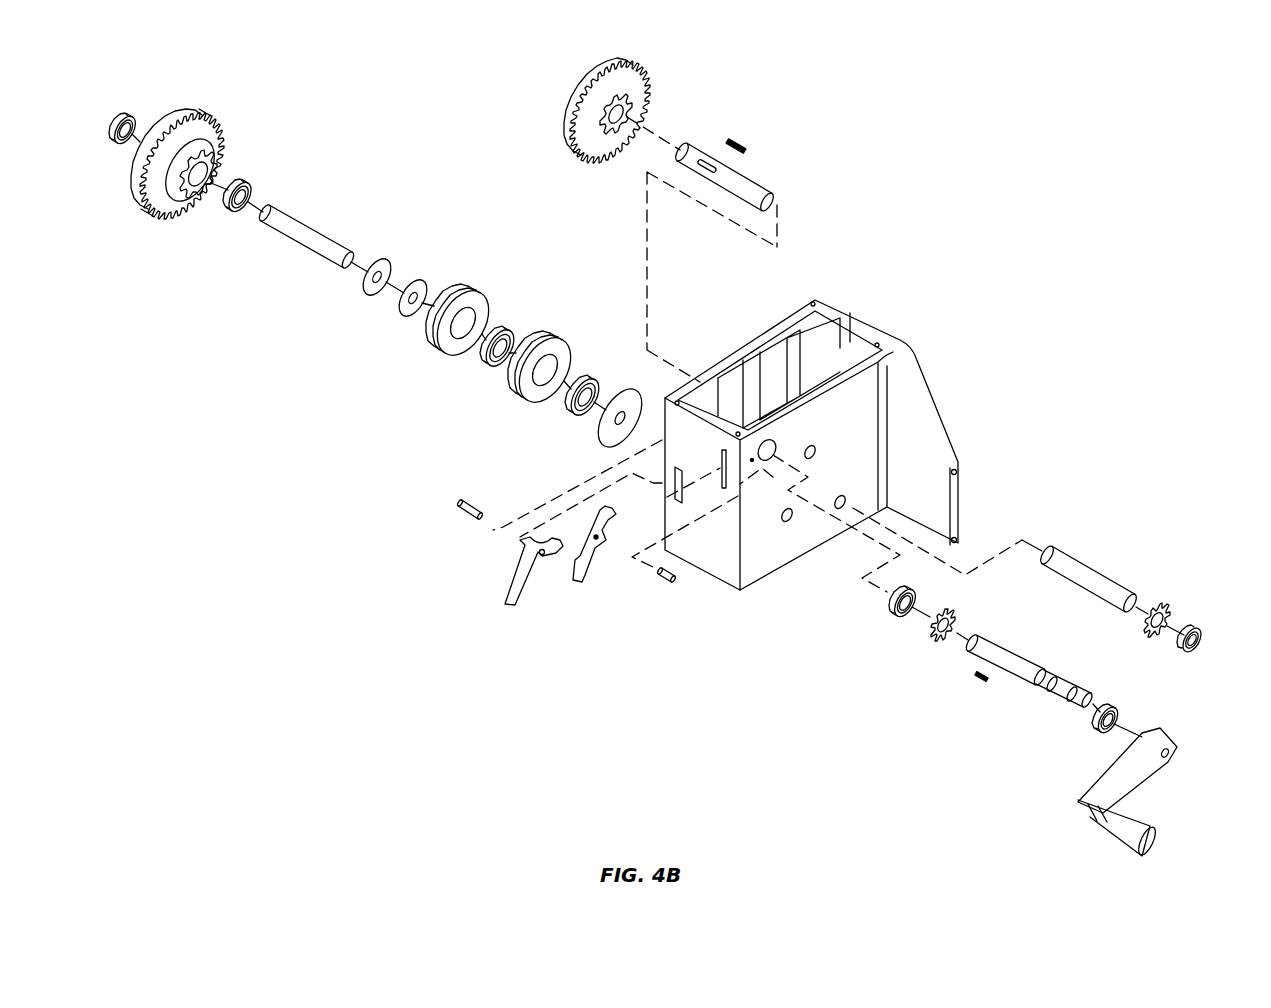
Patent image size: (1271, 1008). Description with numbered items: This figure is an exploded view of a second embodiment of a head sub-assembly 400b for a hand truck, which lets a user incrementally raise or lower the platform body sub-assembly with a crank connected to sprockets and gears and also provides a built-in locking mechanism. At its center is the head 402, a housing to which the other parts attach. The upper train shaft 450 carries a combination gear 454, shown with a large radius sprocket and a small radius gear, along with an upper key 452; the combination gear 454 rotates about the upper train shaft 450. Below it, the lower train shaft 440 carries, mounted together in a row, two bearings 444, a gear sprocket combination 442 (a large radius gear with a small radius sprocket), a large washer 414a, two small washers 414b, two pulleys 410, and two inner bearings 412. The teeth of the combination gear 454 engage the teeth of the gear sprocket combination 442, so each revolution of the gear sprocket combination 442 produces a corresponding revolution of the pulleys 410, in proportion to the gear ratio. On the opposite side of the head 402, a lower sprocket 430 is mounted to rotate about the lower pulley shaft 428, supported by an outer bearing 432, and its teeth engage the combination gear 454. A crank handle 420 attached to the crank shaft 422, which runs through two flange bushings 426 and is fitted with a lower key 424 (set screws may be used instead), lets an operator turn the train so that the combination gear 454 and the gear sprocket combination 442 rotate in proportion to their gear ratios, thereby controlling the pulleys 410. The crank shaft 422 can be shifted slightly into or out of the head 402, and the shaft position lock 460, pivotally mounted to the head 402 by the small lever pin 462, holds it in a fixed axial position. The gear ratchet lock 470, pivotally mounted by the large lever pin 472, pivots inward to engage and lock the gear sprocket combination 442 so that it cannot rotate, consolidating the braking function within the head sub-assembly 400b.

The head sub-assembly 400b is at (1020, 193).
The head 402 is at (738, 594).
The pulleys 410 is at (510, 386).
The inner bearings 412 is at (505, 336).
The large washer 414a is at (593, 440).
The small washers 414b is at (358, 291).
The crank handle 420 is at (1160, 777).
The crank shaft 422 is at (1058, 712).
The lower key 424 is at (982, 688).
The flange bushings 426 is at (898, 622).
The lower pulley shaft 428 is at (1096, 568).
The lower sprocket 430 is at (1170, 598).
The outer bearing 432 is at (1196, 626).
The lower train shaft 440 is at (303, 249).
The gear sprocket combination 442 is at (138, 184).
The bearings 444 is at (117, 114).
The upper train shaft 450 is at (763, 186).
The upper key 452 is at (741, 138).
The combination gear 454 is at (573, 103).
The shaft position lock 460 is at (574, 588).
The small lever pin 462 is at (659, 588).
The gear ratchet lock 470 is at (507, 608).
The large lever pin 472 is at (462, 515).